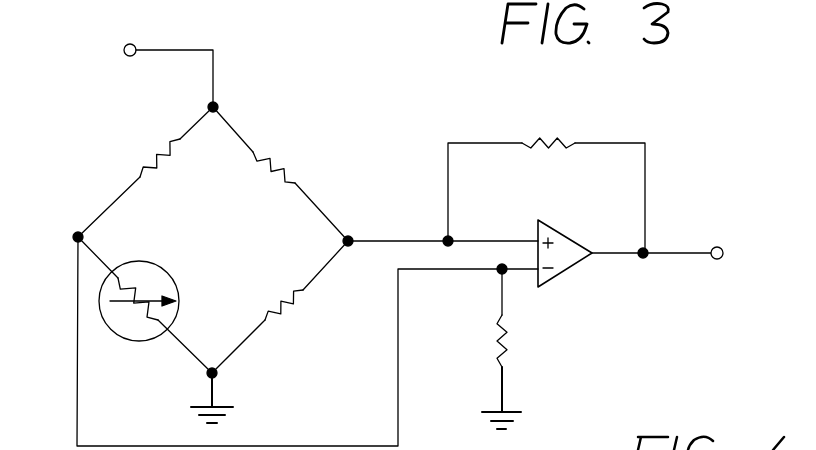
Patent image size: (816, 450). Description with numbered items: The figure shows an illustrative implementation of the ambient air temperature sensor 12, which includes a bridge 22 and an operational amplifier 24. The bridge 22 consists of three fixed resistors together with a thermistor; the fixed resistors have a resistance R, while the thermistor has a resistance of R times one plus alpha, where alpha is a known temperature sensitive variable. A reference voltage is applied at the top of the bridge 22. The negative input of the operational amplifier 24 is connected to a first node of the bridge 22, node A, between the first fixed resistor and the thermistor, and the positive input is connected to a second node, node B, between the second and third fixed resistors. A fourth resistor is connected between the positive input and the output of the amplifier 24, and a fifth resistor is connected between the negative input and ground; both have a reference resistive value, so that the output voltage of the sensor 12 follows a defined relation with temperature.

The ambient air temperature sensor 12 is at (373, 110).
The bridge 22 is at (247, 138).
The operational amplifier 24 is at (568, 270).